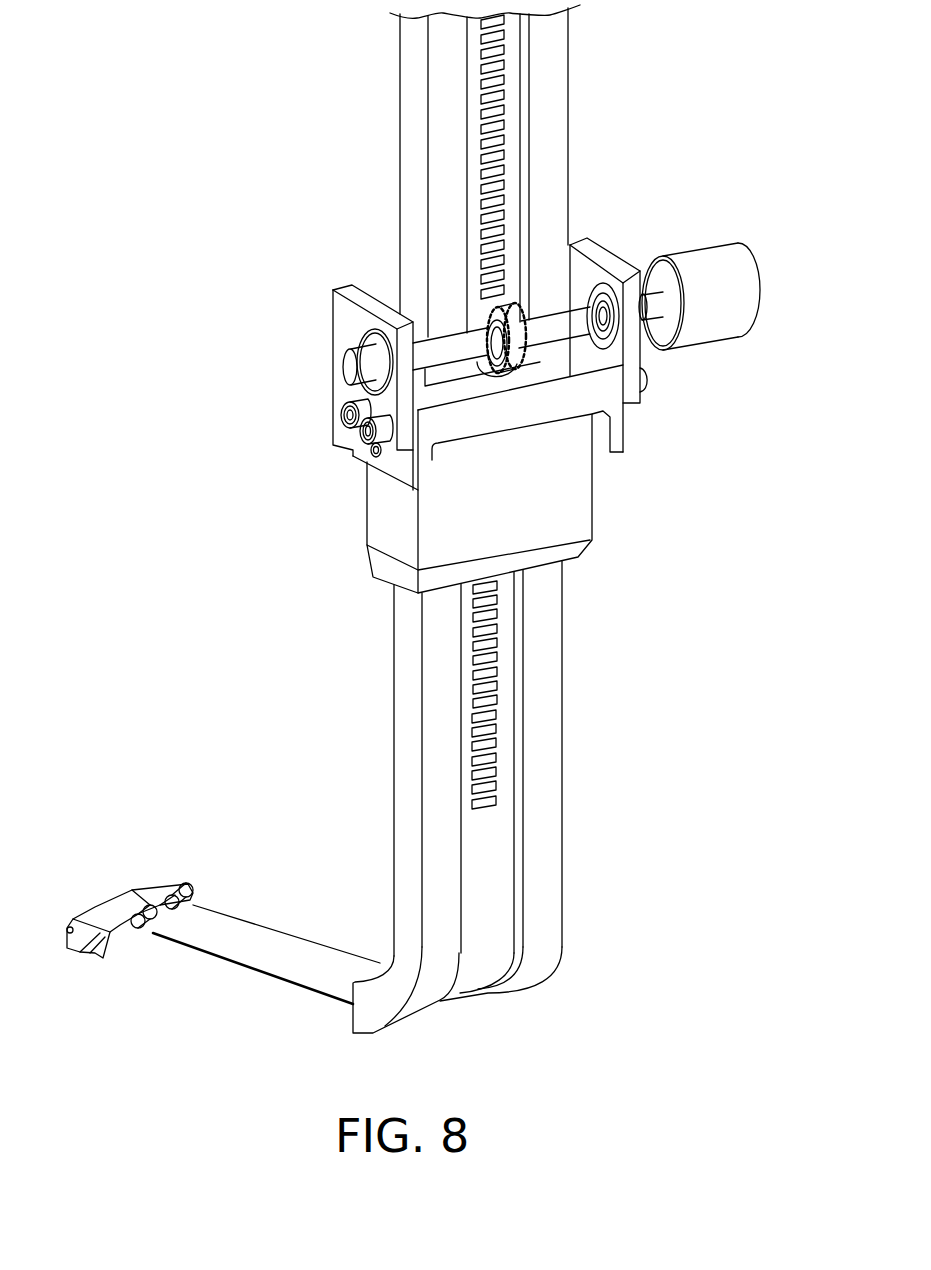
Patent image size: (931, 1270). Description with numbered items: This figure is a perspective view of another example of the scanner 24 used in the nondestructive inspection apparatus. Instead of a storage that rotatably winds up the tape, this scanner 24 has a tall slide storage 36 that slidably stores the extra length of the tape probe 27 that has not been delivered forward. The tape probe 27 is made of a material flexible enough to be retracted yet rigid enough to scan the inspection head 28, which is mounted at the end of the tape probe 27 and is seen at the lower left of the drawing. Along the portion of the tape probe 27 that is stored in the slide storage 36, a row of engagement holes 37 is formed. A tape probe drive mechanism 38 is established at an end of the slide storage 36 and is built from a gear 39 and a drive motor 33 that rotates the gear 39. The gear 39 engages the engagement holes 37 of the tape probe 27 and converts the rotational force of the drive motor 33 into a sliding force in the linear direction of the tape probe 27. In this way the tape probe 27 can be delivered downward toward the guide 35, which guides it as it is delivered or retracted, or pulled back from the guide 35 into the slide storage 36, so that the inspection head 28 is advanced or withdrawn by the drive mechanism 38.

The scanner 24 is at (688, 88).
The slide storage 36 is at (418, 148).
The engagement holes 37 is at (505, 62).
The gear 39 is at (556, 311).
The drive motor 33 is at (733, 220).
The tape probe drive mechanism 38 is at (655, 445).
The guide 35 is at (547, 708).
The tape probe 27 is at (490, 852).
The inspection head 28 is at (90, 934).